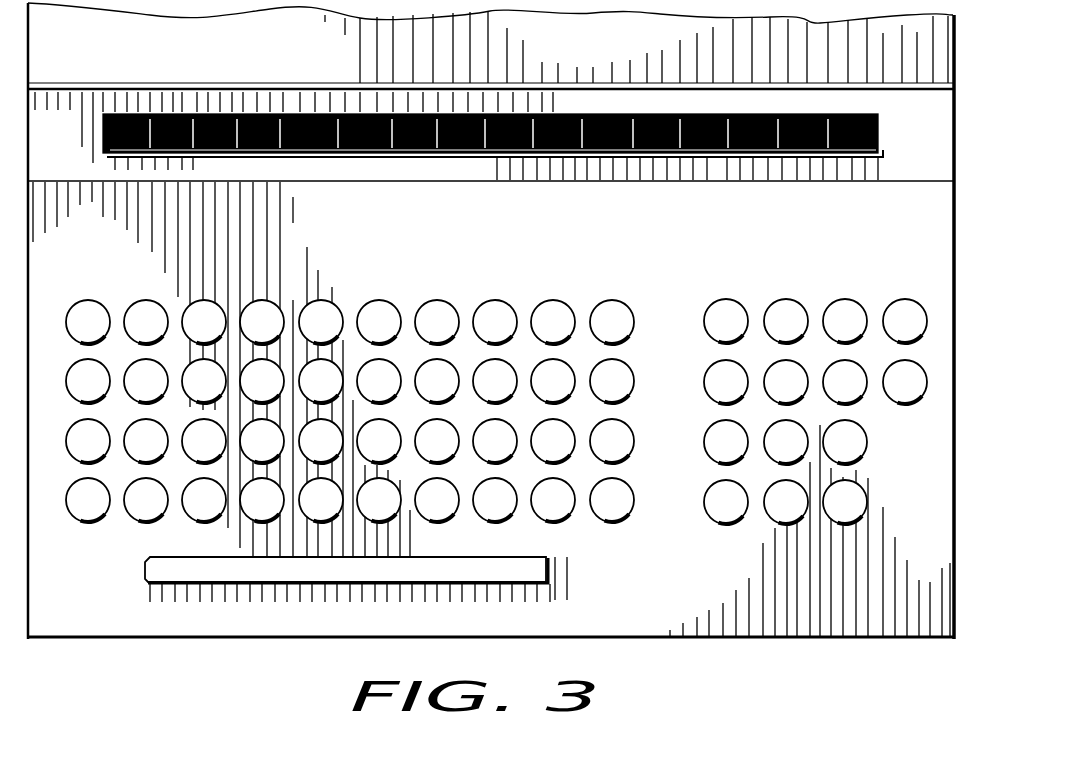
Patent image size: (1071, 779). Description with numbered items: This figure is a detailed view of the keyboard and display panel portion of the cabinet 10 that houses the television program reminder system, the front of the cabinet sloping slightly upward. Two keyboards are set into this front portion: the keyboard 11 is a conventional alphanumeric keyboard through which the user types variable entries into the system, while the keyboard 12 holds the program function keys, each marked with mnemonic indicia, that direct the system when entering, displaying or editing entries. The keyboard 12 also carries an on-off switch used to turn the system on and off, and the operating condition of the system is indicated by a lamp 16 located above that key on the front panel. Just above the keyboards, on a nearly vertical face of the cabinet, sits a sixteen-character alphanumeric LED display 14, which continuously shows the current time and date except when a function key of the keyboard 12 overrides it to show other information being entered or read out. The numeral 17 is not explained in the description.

The cabinet 10 is at (786, 662).
The alphanumeric keyboard 11 is at (146, 278).
The function keyboard 12 is at (815, 374).
The alphanumeric display 14 is at (874, 134).
The lamp 16 is at (815, 284).
The ON/OFF key 17 is at (776, 303).